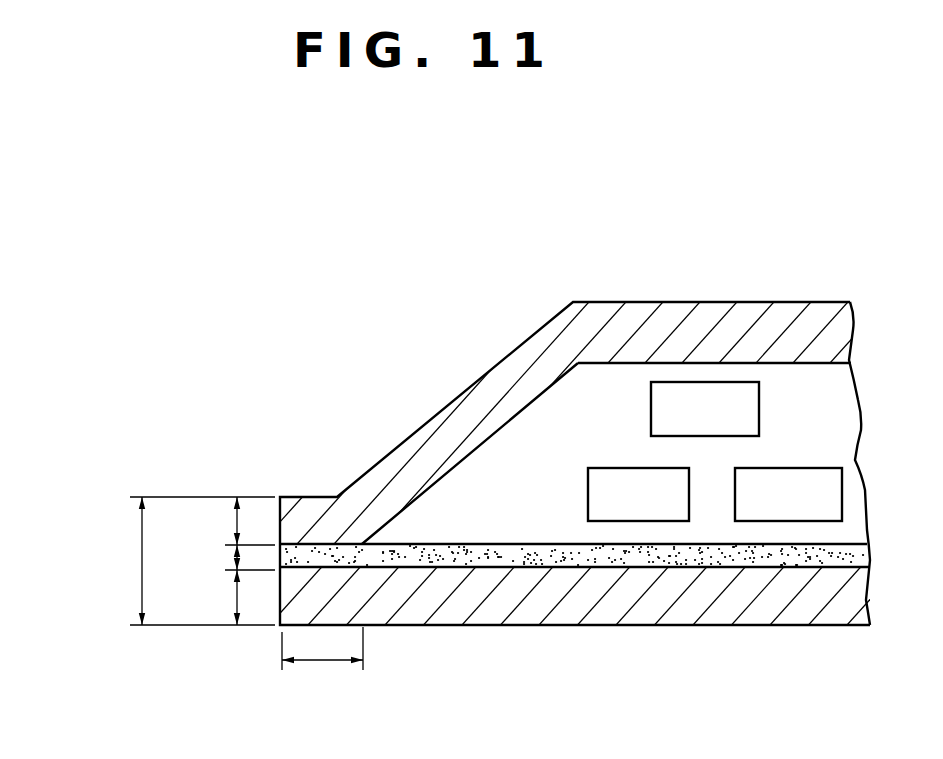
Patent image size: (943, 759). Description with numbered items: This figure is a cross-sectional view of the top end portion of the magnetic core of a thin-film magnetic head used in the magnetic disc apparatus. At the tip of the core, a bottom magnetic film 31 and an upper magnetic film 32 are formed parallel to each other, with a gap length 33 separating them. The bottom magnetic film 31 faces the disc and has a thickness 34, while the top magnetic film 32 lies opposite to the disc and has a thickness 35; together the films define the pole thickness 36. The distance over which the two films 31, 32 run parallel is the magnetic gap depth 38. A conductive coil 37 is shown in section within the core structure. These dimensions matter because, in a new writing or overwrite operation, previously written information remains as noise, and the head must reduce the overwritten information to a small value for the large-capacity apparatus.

The bottom magnetic film 31 is at (557, 627).
The upper magnetic film 32 is at (637, 302).
The gap length 33 is at (235, 553).
The thickness of the bottom magnetic film 34 is at (235, 593).
The thickness of the top magnetic film 35 is at (235, 520).
The pole thickness 36 is at (142, 568).
The conductive coil 37 is at (793, 502).
The magnetic gap depth 38 is at (320, 660).